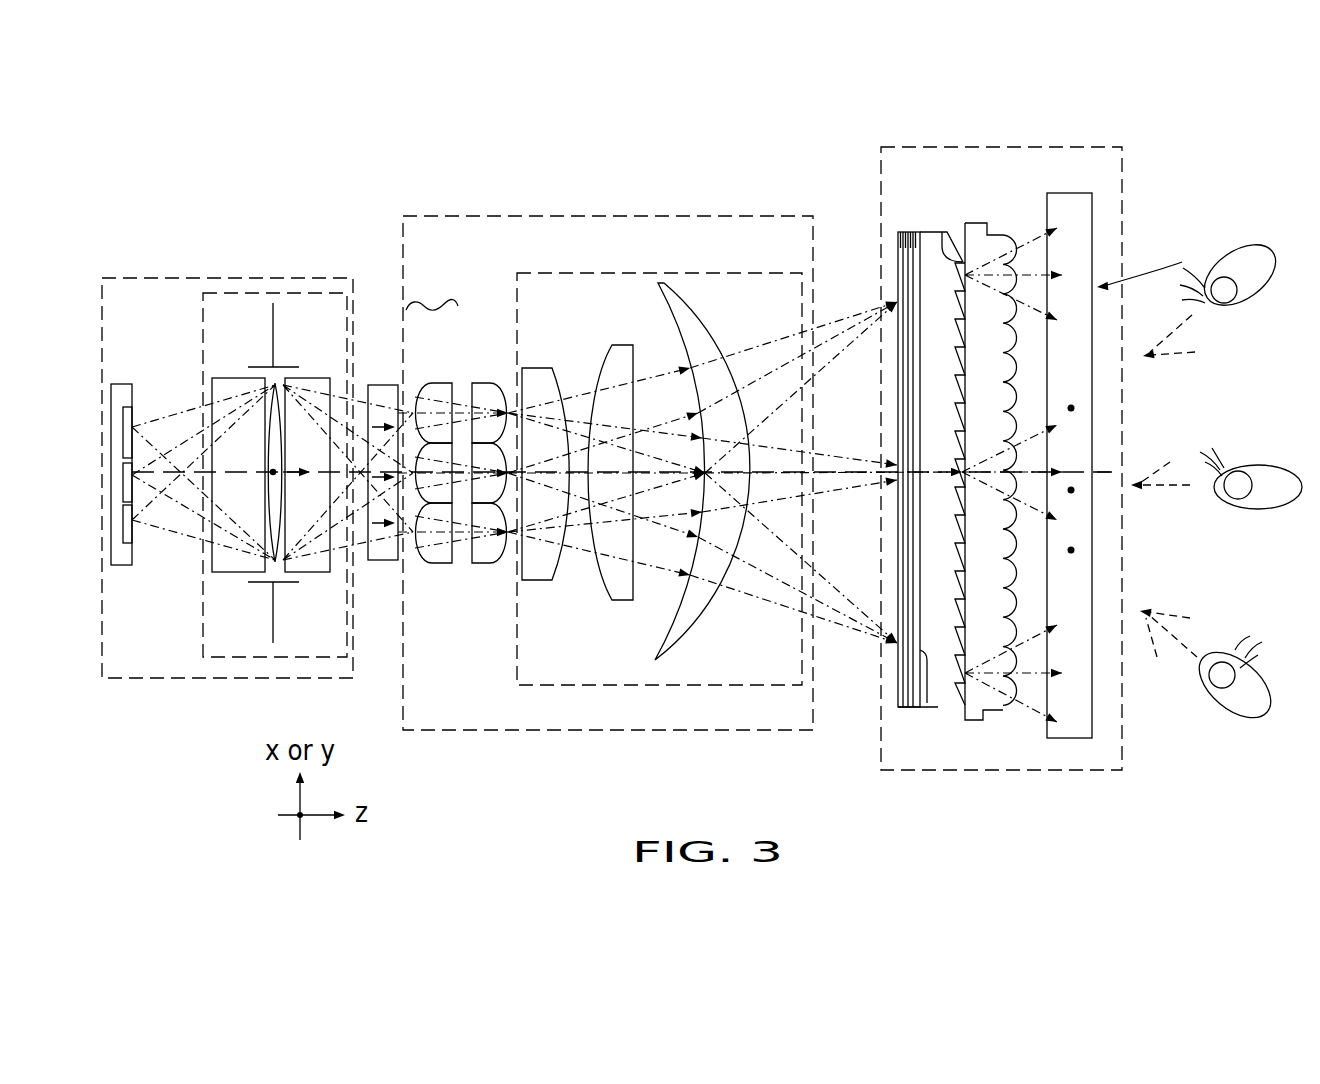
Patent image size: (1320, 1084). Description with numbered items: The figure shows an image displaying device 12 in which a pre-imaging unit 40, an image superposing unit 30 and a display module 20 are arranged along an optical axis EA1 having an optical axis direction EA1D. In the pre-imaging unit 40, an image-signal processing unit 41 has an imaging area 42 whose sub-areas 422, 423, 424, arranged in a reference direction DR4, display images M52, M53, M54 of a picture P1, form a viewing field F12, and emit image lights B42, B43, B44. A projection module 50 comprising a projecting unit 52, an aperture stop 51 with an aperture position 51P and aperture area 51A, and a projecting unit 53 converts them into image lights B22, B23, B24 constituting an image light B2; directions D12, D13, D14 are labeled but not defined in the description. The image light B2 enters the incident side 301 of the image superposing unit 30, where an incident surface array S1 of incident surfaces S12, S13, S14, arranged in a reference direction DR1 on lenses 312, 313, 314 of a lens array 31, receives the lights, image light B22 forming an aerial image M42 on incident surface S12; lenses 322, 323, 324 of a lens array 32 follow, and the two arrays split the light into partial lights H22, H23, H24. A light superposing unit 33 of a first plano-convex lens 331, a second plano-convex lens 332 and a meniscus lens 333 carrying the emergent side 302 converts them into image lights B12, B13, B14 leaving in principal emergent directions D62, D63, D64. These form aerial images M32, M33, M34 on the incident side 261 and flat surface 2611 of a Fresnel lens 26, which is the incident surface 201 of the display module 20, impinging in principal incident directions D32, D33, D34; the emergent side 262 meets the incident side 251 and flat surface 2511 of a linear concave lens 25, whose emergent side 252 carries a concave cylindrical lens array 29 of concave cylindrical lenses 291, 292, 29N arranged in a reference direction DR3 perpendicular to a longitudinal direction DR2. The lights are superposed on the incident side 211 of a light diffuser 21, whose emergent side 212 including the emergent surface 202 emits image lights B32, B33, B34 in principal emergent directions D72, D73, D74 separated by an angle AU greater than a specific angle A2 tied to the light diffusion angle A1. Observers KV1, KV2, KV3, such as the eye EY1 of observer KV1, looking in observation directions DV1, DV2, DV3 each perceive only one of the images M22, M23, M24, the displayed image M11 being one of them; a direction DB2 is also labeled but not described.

The image displaying device 12 is at (772, 191).
The display module 20 is at (1010, 147).
The light diffuser 21 is at (1092, 700).
The linear concave lens 25 is at (972, 720).
The Fresnel lens 26 is at (927, 700).
The concave cylindrical lens array 29 is at (1008, 730).
The image superposing unit 30 is at (645, 216).
The lens array 31 is at (440, 385).
The lens array 32 is at (483, 385).
The light superposing unit 33 is at (600, 273).
The pre-imaging unit 40 is at (245, 278).
The image-signal processing unit 41 is at (113, 384).
The imaging area 42 is at (139, 216).
The projection module 50 is at (222, 293).
The aperture stop 51 is at (266, 380).
The projecting unit 52 is at (228, 378).
The projecting unit 53 is at (312, 378).
The incident surface 201 is at (870, 687).
The emergent surface 202 is at (1097, 210).
The incident side 211 is at (1047, 217).
The emergent side 212 is at (1094, 210).
The incident side 251 is at (966, 720).
The emergent side 252 is at (1003, 700).
The incident side 261 is at (895, 295).
The emergent side 262 is at (940, 232).
The concave cylindrical lens 291 is at (1013, 342).
The concave cylindrical lens 292 is at (1013, 376).
The concave cylindrical lens 29N is at (1013, 568).
The incident side 301 is at (418, 292).
The emergent side 302 is at (714, 328).
The lens 312 is at (427, 387).
The lens 313 is at (470, 563).
The lens 314 is at (452, 563).
The lens 322 is at (493, 387).
The lens 323 is at (495, 563).
The lens 324 is at (506, 563).
The first plano-convex lens 331 is at (537, 368).
The second plano-convex lens 332 is at (608, 345).
The meniscus lens 333 is at (686, 342).
The sub-area 422 is at (117, 565).
The sub-area 423 is at (122, 420).
The sub-area 424 is at (136, 425).
The flat surface 2511 is at (995, 722).
The flat surface 2611 is at (900, 710).
The aperture area 51A is at (268, 560).
The aperture position 51P is at (270, 475).
The optical axis EA1 is at (263, 388).
The optical axis direction EA1D is at (293, 612).
The image light B2 is at (393, 385).
The image light B22 is at (368, 397).
The image light B23 is at (383, 440).
The image light B24 is at (390, 560).
The image light B42 is at (190, 540).
The image light B43 is at (185, 525).
The image light B44 is at (158, 442).
The image light B12 is at (823, 455).
The image light B13 is at (868, 472).
The image light B14 is at (880, 490).
The image light B32 is at (1103, 550).
The image light B33 is at (1100, 458).
The image light B34 is at (1105, 388).
The direction D12 is at (378, 415).
The direction D13 is at (370, 560).
The direction D14 is at (378, 560).
The principal incident direction D32 is at (893, 440).
The principal incident direction D33 is at (825, 552).
The principal incident direction D34 is at (868, 560).
The principal emergent direction D62 is at (742, 432).
The principal emergent direction D63 is at (733, 462).
The principal emergent direction D64 is at (742, 512).
The principal emergent direction D72 is at (1103, 570).
The principal emergent direction D73 is at (1100, 480).
The principal emergent direction D74 is at (1108, 389).
The reference direction DR1 is at (433, 198).
The longitudinal direction DR2 is at (982, 206).
The reference direction DR3 is at (1142, 818).
The reference direction DR4 is at (124, 782).
The observation direction DV1 is at (1186, 632).
The observation direction DV2 is at (1175, 488).
The observation direction DV3 is at (1188, 336).
The direction DB2 is at (1250, 545).
The image M11 is at (1104, 256).
The image M22 is at (1104, 613).
The image M23 is at (1104, 438).
The image M24 is at (1104, 353).
The aerial image M32 is at (915, 232).
The aerial image M33 is at (901, 232).
The aerial image M34 is at (895, 232).
The aerial image M42 is at (460, 178).
The image M52 is at (180, 523).
The image M53 is at (132, 565).
The image M54 is at (142, 440).
The incident surface array S1 is at (432, 283).
The incident surface S12 is at (428, 395).
The incident surface S13 is at (428, 632).
The incident surface S14 is at (422, 563).
The partial light H22 is at (512, 410).
The partial light H23 is at (514, 446).
The partial light H24 is at (518, 595).
The observer KV1 is at (1243, 694).
The observer KV2 is at (1251, 472).
The observer KV3 is at (1199, 261).
The eye EY1 is at (1222, 680).
The light diffusion angle A1 is at (1252, 371).
The specific angle A2 is at (1252, 337).
The angle AU is at (1252, 401).
The picture P1 is at (152, 158).
The viewing field F12 is at (174, 798).